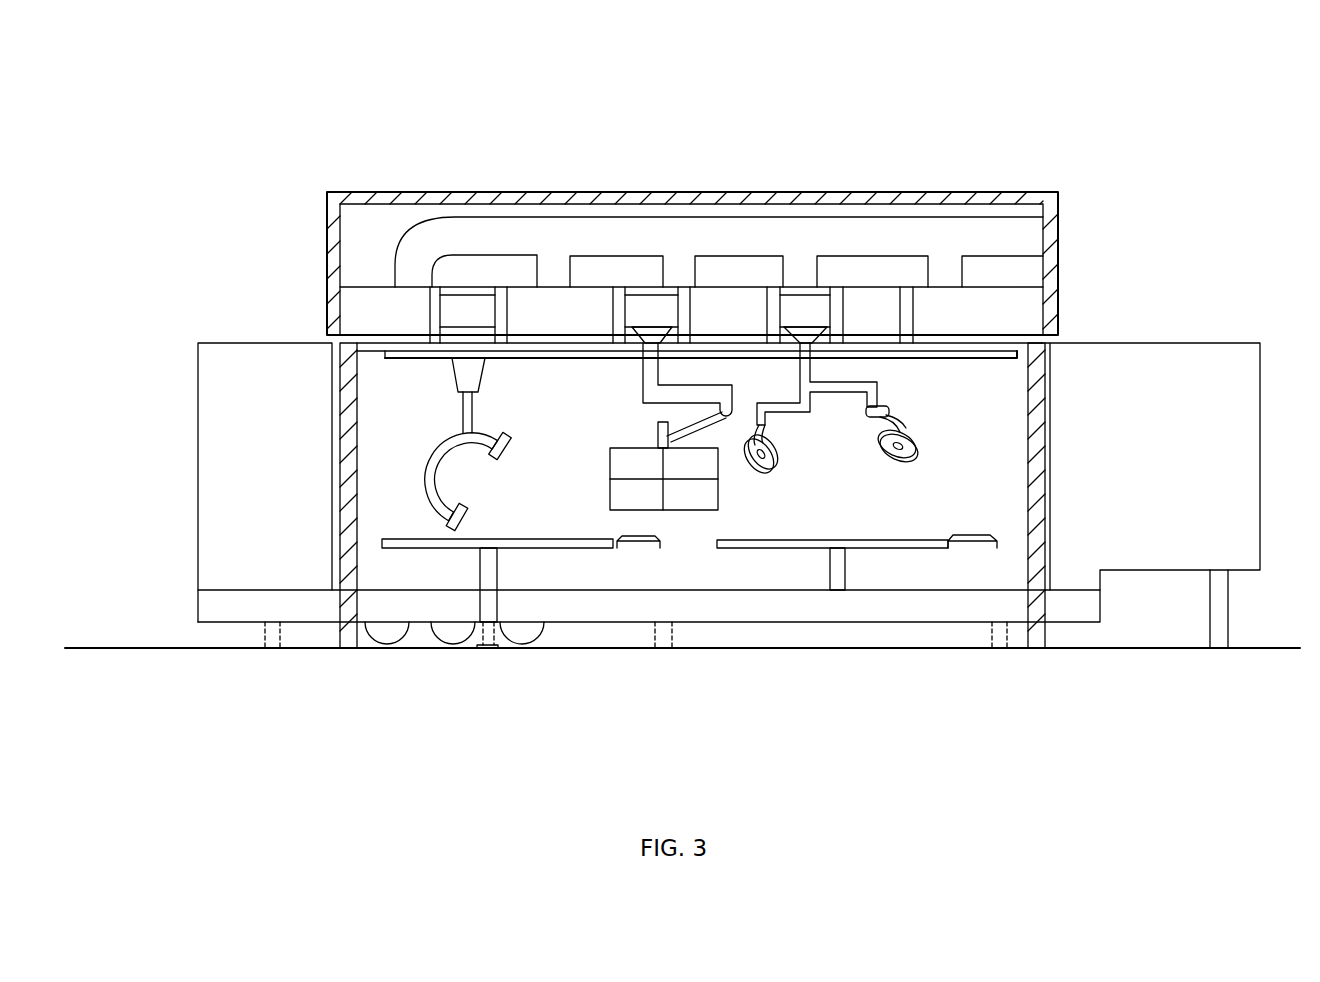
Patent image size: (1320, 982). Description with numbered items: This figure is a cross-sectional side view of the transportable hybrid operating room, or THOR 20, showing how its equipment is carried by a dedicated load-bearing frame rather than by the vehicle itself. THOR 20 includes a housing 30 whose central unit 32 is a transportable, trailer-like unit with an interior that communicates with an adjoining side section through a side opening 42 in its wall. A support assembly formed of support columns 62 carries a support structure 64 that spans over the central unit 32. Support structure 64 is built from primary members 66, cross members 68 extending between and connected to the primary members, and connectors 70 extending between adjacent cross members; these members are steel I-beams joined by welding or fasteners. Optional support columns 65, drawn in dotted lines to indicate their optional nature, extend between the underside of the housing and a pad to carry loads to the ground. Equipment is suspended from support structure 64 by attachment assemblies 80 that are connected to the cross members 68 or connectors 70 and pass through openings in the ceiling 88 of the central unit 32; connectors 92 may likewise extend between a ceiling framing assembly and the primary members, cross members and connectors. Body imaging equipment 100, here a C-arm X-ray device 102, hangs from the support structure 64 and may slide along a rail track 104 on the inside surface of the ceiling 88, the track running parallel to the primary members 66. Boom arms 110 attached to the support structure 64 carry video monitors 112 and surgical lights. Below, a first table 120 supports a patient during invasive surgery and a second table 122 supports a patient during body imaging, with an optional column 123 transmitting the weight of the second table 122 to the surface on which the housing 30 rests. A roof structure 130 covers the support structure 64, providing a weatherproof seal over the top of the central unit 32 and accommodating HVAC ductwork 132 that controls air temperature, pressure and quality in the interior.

The THOR 20 is at (299, 117).
The housing 30 is at (279, 326).
The central unit 32 is at (217, 343).
The side opening 42 is at (332, 563).
The support columns 62 is at (1037, 403).
The support structure 64 is at (392, 351).
The support columns 65 is at (264, 630).
The primary members 66 is at (552, 293).
The cross members 68 is at (617, 292).
The connectors 70 is at (798, 290).
The attachment assembly 80 is at (645, 333).
The ceiling 88 is at (1020, 347).
The connectors 92 is at (982, 340).
The body imaging equipment 100 is at (496, 404).
The C-arm X-ray device 102 is at (458, 515).
The rail track 104 is at (405, 362).
The boom arms 110 is at (710, 390).
The video monitors 112 is at (708, 492).
The first table 120 is at (838, 578).
The second table 122 is at (492, 555).
The column 123 is at (497, 605).
The roof structure 130 is at (375, 195).
The ductwork 132 is at (460, 228).